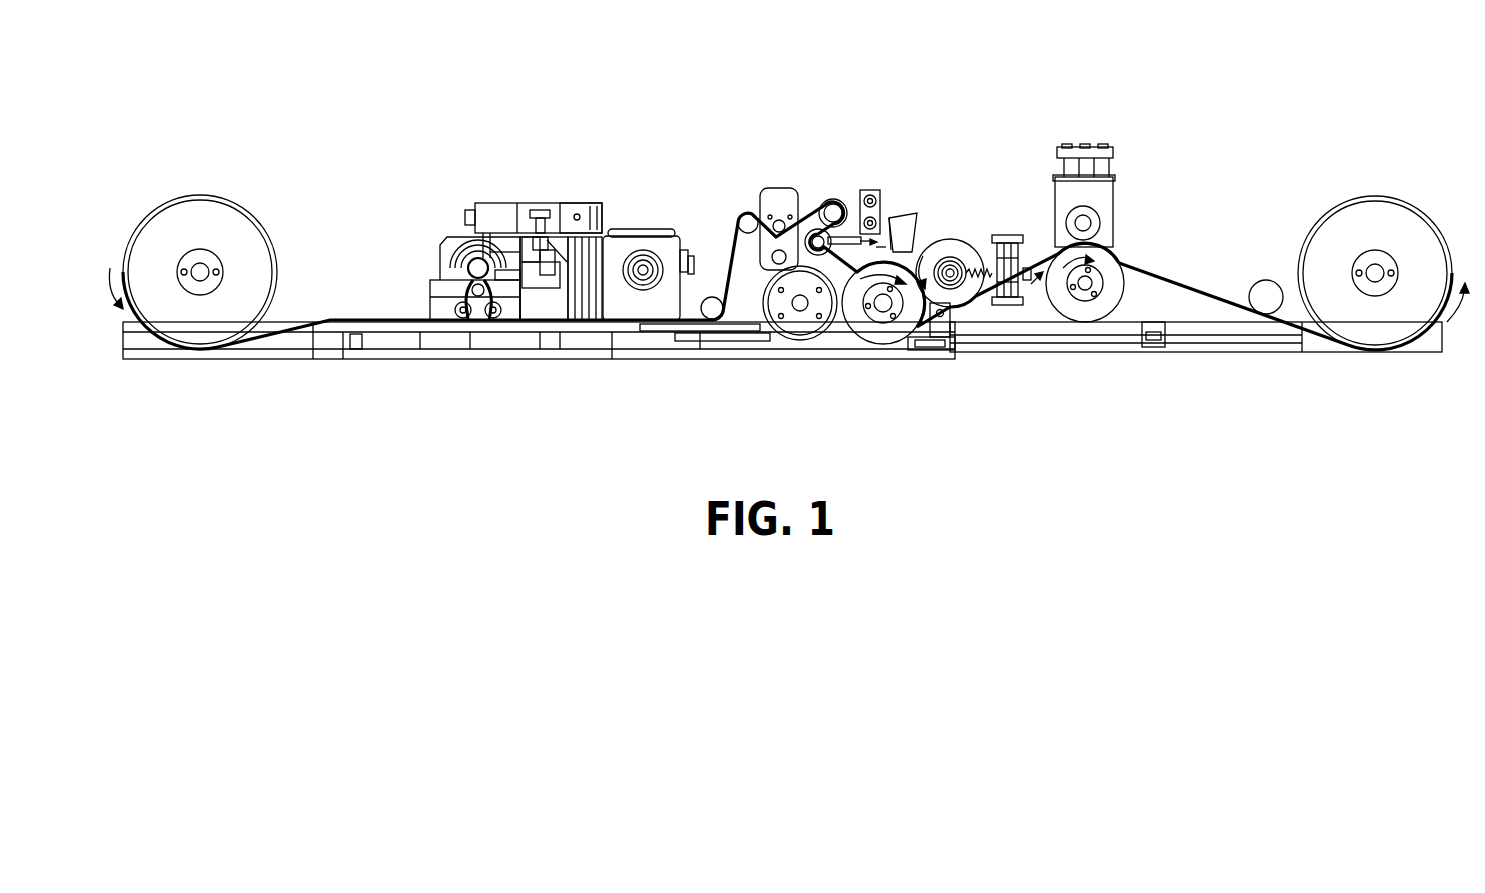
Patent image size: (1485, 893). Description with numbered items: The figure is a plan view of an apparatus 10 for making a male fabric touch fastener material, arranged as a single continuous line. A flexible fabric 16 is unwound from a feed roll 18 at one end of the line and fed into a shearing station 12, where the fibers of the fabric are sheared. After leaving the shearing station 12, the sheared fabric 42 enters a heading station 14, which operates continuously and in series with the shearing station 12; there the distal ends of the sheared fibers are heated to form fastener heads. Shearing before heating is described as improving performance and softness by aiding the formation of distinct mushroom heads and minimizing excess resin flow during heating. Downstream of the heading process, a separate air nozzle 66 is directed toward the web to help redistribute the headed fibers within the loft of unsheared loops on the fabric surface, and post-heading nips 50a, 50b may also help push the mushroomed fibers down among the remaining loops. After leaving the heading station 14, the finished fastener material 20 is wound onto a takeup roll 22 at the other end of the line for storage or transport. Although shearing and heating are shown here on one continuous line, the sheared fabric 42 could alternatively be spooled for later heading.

The apparatus 10 is at (132, 182).
The shearing station 12 is at (489, 160).
The heading station 14 is at (919, 150).
The flexible fabric 16 is at (370, 314).
The feed roll 18 is at (258, 222).
The fastener material 20 is at (1180, 264).
The takeup roll 22 is at (1378, 197).
The sheared fabric 42 is at (732, 243).
The post-heading nip 50a is at (938, 347).
The post-heading nip 50b is at (1048, 242).
The air nozzle 66 is at (906, 223).